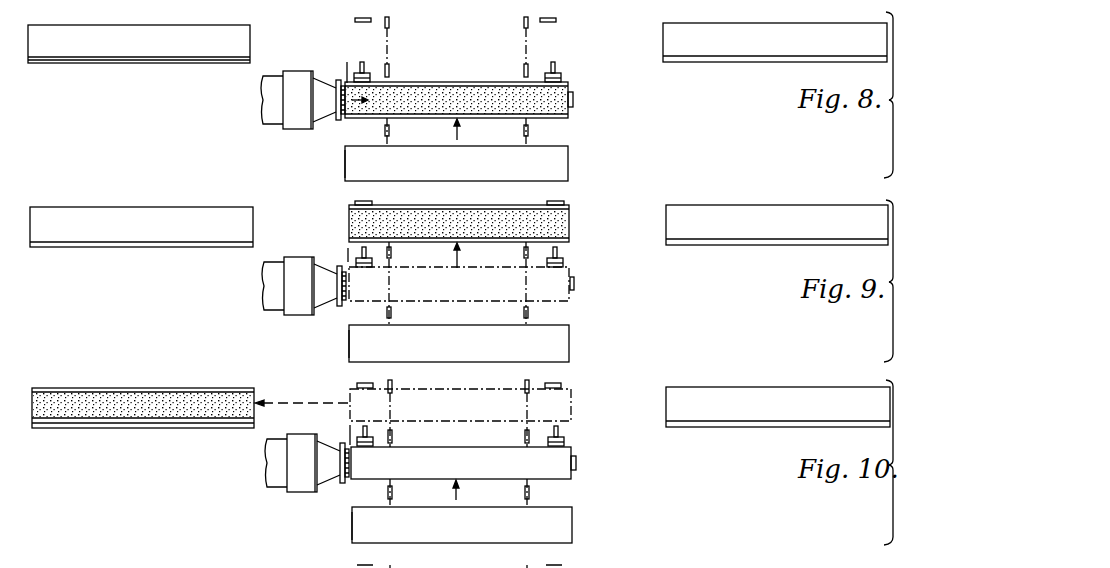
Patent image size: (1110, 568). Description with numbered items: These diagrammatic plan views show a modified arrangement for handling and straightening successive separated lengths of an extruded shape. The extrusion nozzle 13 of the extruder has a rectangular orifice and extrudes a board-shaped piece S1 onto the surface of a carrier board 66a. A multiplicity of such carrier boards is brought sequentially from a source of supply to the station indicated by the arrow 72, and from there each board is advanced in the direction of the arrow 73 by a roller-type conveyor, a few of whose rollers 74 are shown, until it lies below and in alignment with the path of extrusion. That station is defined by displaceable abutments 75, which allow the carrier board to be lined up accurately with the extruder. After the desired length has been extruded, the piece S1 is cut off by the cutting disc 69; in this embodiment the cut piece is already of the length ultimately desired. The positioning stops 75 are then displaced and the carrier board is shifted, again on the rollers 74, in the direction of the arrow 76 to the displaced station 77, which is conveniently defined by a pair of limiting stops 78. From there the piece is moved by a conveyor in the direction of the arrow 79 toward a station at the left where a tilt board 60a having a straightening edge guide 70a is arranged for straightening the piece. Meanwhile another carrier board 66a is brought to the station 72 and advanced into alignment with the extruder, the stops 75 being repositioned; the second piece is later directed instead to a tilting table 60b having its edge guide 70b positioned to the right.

In FIG. 8, the extrusion nozzle 13 is at (320, 93).
In FIG. 9, the extrusion nozzle 13 is at (304, 286).
In FIG. 10, the extrusion nozzle 13 is at (307, 463).
In FIG. 8, the tilt board 60a is at (141, 50).
In FIG. 9, the tilt board 60a is at (111, 229).
In FIG. 8, the tilting table 60b is at (755, 52).
In FIG. 9, the tilting table 60b is at (788, 218).
In FIG. 10, the tilting table 60b is at (710, 405).
In FIG. 8, the straightening edge guide 70a is at (183, 63).
In FIG. 9, the straightening edge guide 70a is at (195, 247).
In FIG. 10, the straightening edge guide 70a is at (85, 428).
In FIG. 8, the edge guide 70b is at (668, 63).
In FIG. 9, the edge guide 70b is at (667, 248).
In FIG. 10, the edge guide 70b is at (725, 430).
In FIG. 8, the cutting disc 69 is at (344, 72).
In FIG. 8, the displaceable abutments 75 is at (364, 70).
In FIG. 9, the displaceable abutments 75 is at (459, 257).
In FIG. 10, the displaceable abutments 75 is at (565, 444).
In FIG. 8, the rollers 74 is at (389, 67).
In FIG. 9, the rollers 74 is at (524, 311).
In FIG. 10, the rollers 74 is at (460, 443).
In FIG. 8, the extruded piece S1 is at (425, 95).
In FIG. 9, the extruded piece S1 is at (452, 222).
In FIG. 10, the extruded piece S1 is at (118, 405).
In FIG. 8, the carrier board 66a is at (472, 82).
In FIG. 9, the carrier board 66a is at (566, 242).
In FIG. 10, the carrier board 66a is at (553, 470).
In FIG. 8, the direction of advance arrow 73 is at (457, 140).
In FIG. 10, the direction of advance arrow 73 is at (456, 498).
In FIG. 8, the supply station 72 is at (338, 160).
In FIG. 9, the supply station 72 is at (338, 340).
In FIG. 10, the supply station 72 is at (338, 530).
In FIG. 9, the displaced station 77 is at (338, 231).
In FIG. 9, the limiting stops 78 is at (372, 203).
In FIG. 9, the direction of shift arrow 76 is at (457, 266).
In FIG. 10, the direction of transfer arrow 79 is at (273, 403).